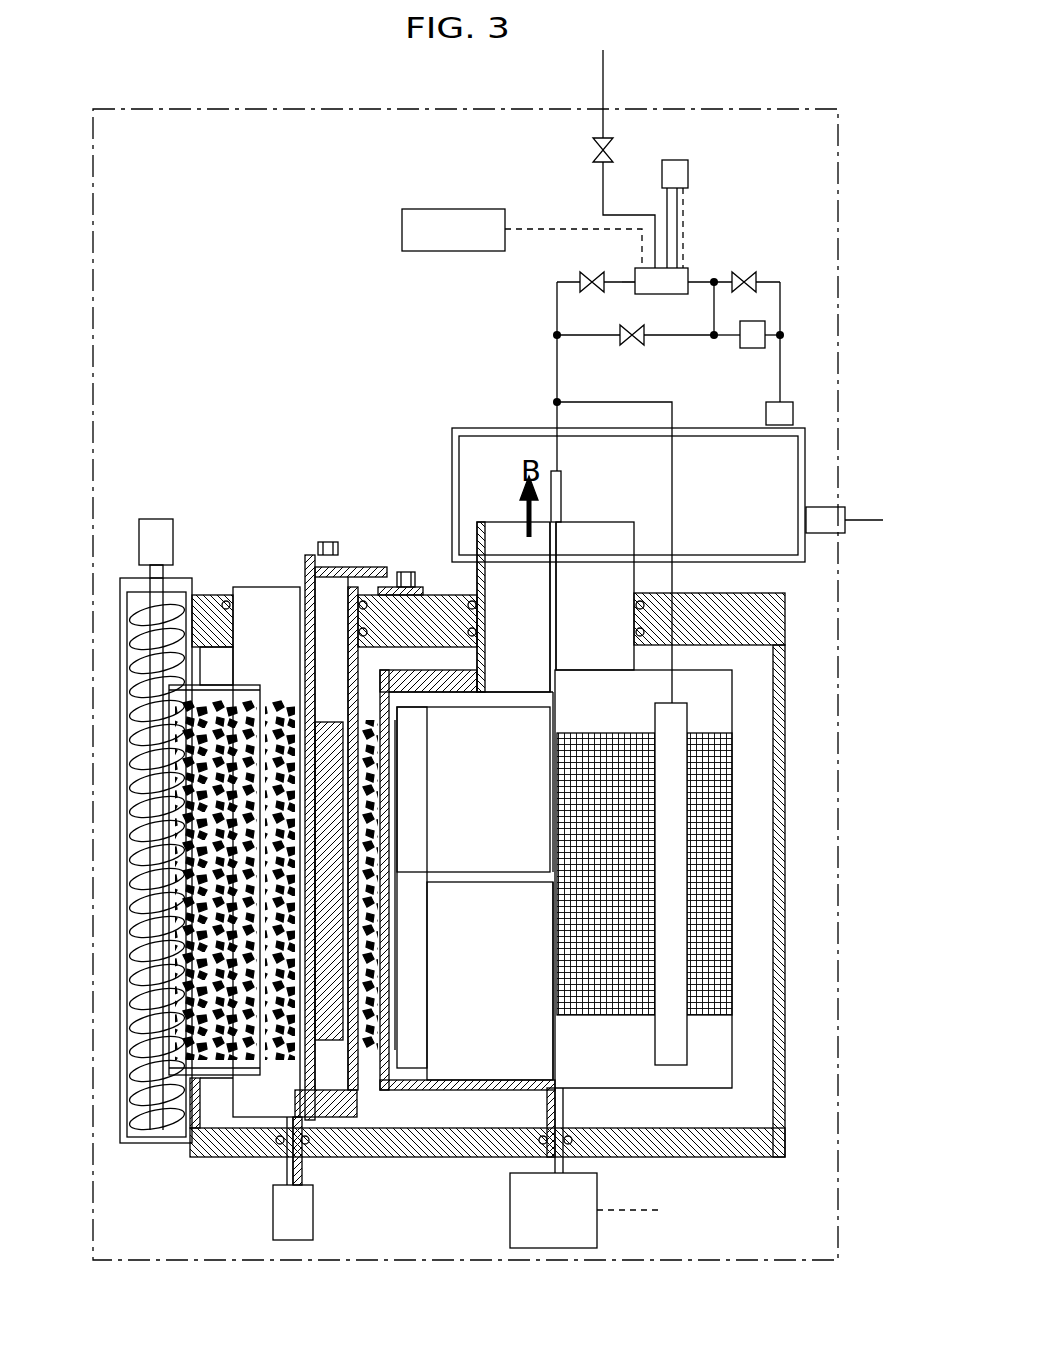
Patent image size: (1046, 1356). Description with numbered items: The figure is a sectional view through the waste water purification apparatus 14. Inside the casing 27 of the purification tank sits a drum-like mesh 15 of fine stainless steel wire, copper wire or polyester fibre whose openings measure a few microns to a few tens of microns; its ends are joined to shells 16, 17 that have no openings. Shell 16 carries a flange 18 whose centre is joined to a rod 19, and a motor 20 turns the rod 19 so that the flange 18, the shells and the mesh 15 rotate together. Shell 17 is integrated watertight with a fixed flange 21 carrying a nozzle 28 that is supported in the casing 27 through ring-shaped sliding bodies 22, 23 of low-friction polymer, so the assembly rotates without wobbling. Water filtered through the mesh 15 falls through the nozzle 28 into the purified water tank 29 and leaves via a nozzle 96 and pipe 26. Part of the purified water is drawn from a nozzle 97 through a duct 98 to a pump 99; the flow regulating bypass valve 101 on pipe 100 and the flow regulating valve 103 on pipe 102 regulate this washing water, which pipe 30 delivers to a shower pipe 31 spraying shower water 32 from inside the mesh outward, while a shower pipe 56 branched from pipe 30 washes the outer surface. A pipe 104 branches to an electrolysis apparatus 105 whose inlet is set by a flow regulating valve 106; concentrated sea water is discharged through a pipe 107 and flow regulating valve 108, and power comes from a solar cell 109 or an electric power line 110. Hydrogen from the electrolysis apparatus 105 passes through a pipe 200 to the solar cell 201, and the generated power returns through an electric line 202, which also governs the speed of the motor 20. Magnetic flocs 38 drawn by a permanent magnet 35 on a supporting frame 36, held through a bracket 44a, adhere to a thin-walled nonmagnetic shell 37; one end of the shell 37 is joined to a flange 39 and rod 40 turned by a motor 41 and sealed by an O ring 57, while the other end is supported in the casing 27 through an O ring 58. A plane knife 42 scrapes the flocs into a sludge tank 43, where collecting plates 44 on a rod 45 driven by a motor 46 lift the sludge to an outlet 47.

The treatment apparatus 14 is at (322, 108).
The mesh 15 is at (715, 855).
The shell 16 is at (715, 1055).
The shell 17 is at (720, 700).
The flange 18 is at (455, 1088).
The rod 19 is at (563, 1110).
The motor 20 is at (520, 1215).
The fixed flange 21 is at (448, 680).
The ring-shaped sliding body 22 is at (478, 603).
The ring-shaped sliding body 23 is at (478, 634).
The pipe 26 is at (865, 520).
The casing 27 is at (765, 610).
The nozzle 28 is at (483, 522).
The purified water tank 29 is at (452, 460).
The pipe 30 is at (557, 370).
The shower pipe 31 is at (415, 805).
The shower water 32 is at (393, 1002).
The permanent magnet 35 is at (330, 1030).
The supporting frame 36 is at (310, 550).
The thin-walled shell 37 is at (270, 590).
The magnetic flocs 38 is at (410, 928).
The flange 39 is at (330, 1120).
The rod 40 is at (287, 1175).
The motor 41 is at (280, 1215).
The plane knife 42 is at (175, 805).
The sludge tank 43 is at (120, 996).
The collecting plates 44 is at (135, 678).
The bracket 44a is at (360, 567).
The rod 45 is at (150, 598).
The motor 46 is at (155, 519).
The outlet 47 is at (140, 623).
The shower pipe 56 is at (655, 1045).
The O ring 57 is at (280, 1138).
The O ring 58 is at (224, 600).
The nozzle 96 is at (822, 533).
The nozzle 97 is at (780, 395).
The duct 98 is at (780, 335).
The pump 99 is at (752, 350).
The pipe 100 is at (770, 282).
The flow regulating bypass valve 101 is at (744, 270).
The pipe 102 is at (585, 335).
The flow regulating valve 103 is at (640, 335).
The pipe 104 is at (700, 282).
The electrolysis apparatus 105 is at (622, 282).
The flow regulating valve 106 is at (580, 282).
The pipe 107 is at (603, 92).
The flow regulating valve 108 is at (593, 150).
The solar cell 109 is at (402, 229).
The electric power line 110 is at (568, 225).
The pipe 200 is at (667, 200).
The solar cell 201 is at (672, 160).
The electric line 202 is at (683, 205).